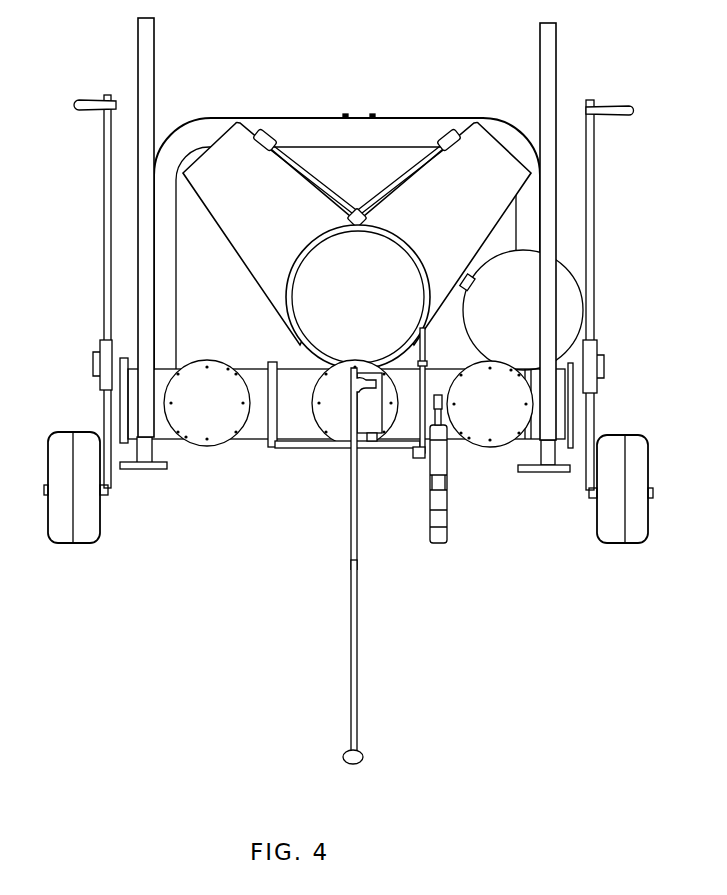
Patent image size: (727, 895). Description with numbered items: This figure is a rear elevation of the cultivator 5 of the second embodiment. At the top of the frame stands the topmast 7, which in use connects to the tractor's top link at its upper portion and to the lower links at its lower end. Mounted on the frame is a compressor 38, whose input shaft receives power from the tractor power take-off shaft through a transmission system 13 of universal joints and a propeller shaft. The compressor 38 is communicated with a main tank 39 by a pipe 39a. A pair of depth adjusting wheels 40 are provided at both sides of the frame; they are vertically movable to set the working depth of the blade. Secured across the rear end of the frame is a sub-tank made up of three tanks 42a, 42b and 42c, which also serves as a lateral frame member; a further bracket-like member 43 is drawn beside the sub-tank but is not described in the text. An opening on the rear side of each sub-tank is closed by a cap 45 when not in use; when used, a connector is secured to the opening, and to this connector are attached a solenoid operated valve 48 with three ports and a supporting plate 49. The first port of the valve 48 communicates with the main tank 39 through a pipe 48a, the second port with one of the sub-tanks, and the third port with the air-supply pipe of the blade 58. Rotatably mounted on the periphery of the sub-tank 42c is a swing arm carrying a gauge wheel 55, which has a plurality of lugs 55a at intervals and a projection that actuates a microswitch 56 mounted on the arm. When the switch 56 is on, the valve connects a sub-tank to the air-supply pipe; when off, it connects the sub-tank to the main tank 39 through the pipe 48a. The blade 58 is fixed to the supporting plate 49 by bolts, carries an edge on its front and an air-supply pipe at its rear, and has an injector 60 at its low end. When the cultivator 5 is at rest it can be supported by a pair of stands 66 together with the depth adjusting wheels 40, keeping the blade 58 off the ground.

The cultivator 5 is at (433, 75).
The topmast 7 is at (372, 114).
The transmission system 13 is at (426, 365).
The compressor 38 is at (354, 291).
The main tank 39 is at (563, 271).
The pipe 39a is at (468, 284).
The depth adjusting wheels 40 is at (62, 535).
The sub-tank 42a is at (250, 366).
The sub-tank 42b is at (290, 430).
The sub-tank 42c is at (562, 412).
The bracket 43 is at (265, 452).
The cap 45 is at (203, 442).
The solenoid operated valve 48 is at (390, 366).
The pipe 48a is at (385, 450).
The supporting plate 49 is at (318, 419).
The gauge wheel 55 is at (445, 500).
The lugs 55a is at (440, 548).
The microswitch 56 is at (417, 458).
The blade 58 is at (357, 655).
The injector 60 is at (364, 758).
The stands 66 is at (143, 470).